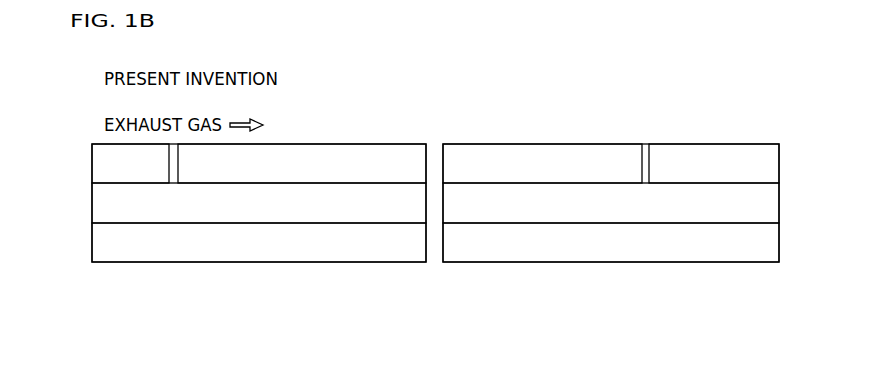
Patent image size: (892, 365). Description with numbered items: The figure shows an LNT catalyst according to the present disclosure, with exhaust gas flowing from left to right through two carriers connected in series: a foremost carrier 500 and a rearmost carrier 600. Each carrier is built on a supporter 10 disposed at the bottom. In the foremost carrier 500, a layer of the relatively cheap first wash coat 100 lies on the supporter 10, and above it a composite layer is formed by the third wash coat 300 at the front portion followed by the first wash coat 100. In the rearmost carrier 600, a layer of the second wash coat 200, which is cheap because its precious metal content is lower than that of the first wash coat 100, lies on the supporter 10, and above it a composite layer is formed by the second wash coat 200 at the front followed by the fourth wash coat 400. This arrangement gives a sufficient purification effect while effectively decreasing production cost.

The supporter 10 is at (435, 242).
The first wash coat 100 is at (259, 183).
The second wash coat 200 is at (611, 183).
The third wash coat 300 is at (130, 163).
The fourth wash coat 400 is at (714, 163).
The foremost carrier 500 is at (249, 268).
The rearmost carrier 600 is at (601, 268).